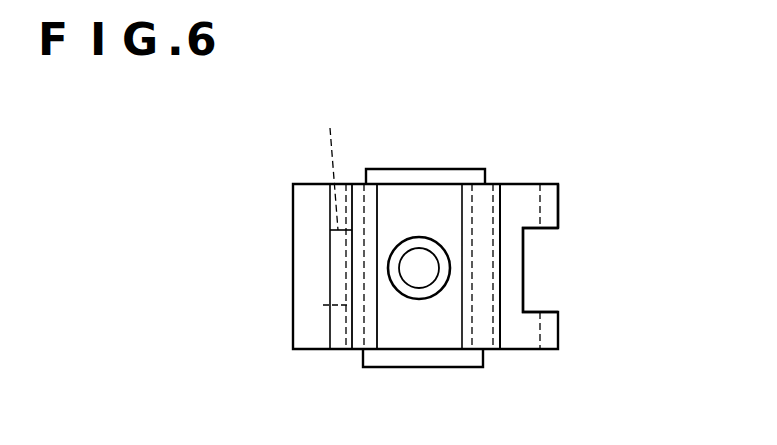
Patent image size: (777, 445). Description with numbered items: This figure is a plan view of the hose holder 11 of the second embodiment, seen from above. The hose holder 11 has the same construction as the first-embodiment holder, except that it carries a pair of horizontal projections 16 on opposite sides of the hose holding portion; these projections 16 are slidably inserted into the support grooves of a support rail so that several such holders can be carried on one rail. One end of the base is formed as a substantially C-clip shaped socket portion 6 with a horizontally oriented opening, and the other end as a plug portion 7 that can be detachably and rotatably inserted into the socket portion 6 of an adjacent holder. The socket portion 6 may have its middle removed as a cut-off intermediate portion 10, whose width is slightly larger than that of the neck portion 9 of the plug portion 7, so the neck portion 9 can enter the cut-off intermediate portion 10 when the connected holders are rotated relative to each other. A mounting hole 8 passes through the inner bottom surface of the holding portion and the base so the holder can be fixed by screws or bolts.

The socket portion 6 is at (550, 335).
The plug portion 7 is at (298, 308).
The mounting hole 8 is at (418, 253).
The neck portion 9 is at (330, 167).
The cut-off intermediate portion 10 is at (547, 237).
The hose holder 11 is at (557, 168).
The horizontal projections 16 is at (449, 176).